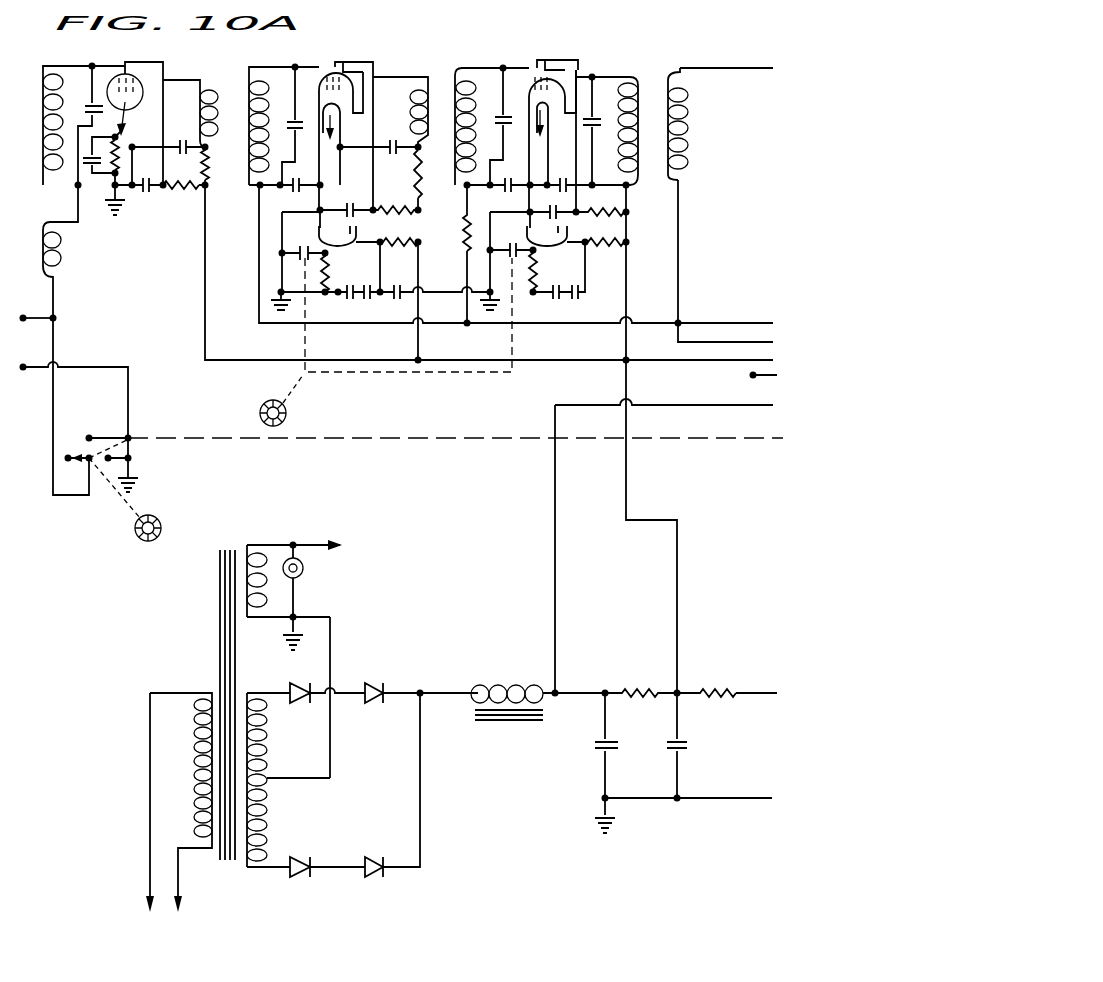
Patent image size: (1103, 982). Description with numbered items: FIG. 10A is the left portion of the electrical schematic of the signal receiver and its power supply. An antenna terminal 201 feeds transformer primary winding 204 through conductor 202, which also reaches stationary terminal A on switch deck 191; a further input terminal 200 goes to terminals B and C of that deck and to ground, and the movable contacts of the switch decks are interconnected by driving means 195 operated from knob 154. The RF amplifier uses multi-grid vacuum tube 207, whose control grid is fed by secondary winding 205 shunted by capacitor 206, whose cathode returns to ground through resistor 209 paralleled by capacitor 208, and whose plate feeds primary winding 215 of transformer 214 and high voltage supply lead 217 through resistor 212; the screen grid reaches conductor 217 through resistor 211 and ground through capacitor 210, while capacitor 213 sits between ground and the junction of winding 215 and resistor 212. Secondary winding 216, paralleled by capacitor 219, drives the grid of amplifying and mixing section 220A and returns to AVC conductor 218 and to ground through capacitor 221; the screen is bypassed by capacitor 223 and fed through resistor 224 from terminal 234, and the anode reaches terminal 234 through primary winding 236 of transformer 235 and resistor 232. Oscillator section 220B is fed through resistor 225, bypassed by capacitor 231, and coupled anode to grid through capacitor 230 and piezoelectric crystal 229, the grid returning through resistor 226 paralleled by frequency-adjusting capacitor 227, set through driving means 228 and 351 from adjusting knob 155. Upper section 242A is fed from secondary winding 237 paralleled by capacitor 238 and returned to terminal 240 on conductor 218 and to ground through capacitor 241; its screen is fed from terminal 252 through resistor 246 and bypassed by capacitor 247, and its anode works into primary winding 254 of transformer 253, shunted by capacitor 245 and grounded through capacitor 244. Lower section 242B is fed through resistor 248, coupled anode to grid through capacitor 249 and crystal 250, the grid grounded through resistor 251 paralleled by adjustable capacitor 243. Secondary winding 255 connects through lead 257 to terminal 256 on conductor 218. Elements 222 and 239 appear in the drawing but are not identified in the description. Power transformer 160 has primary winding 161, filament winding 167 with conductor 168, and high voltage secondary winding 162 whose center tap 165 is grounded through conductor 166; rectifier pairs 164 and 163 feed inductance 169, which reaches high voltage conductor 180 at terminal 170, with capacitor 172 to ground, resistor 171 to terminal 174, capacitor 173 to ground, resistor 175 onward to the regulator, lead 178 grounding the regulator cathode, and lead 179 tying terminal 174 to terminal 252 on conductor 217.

The knob 154 is at (178, 518).
The adjusting knob 155 is at (260, 415).
The transformer 160 is at (193, 654).
The primary winding 161 is at (203, 850).
The high voltage secondary winding 162 is at (265, 868).
The pair of rectifiers 163 is at (375, 878).
The pair of rectifiers 164 is at (376, 682).
The center tap 165 is at (265, 778).
The conductor 166 is at (331, 626).
The filament secondary winding 167 is at (265, 527).
The conductor 168 is at (320, 543).
The inductance 169 is at (510, 685).
The terminal 170 is at (558, 691).
The resistor 171 is at (648, 690).
The capacitor 172 is at (614, 740).
The capacitor 173 is at (684, 744).
The terminal 174 is at (680, 691).
The resistor 175 is at (738, 691).
The lead 178 is at (740, 775).
The lead 179 is at (626, 503).
The high voltage conductor 180 is at (747, 385).
The switch deck 191 is at (105, 526).
The driving means 195 is at (460, 442).
The input terminal 200 is at (23, 367).
The terminal 201 is at (23, 316).
The conductor 202 is at (58, 315).
The transformer primary winding 204 is at (43, 228).
The transformer secondary winding 205 is at (43, 120).
The capacitor 206 is at (88, 100).
The multi-grid vacuum tube 207 is at (137, 77).
The capacitor 208 is at (97, 180).
The resistor 209 is at (124, 152).
The capacitor 210 is at (148, 190).
The resistor 211 is at (188, 192).
The resistor 212 is at (212, 171).
The capacitor 213 is at (181, 138).
The transformer 214 is at (257, 66).
The primary winding 215 is at (203, 80).
The secondary winding 216 is at (285, 74).
The high voltage supply conductor 217 is at (205, 320).
The AVC conductor 218 is at (258, 215).
The capacitor 219 is at (297, 118).
The amplifying and mixing section 220A is at (343, 72).
The crystal controlled oscillator section 220B is at (317, 230).
The capacitor 221 is at (290, 192).
The capacitor 222 is at (392, 140).
The capacitor 223 is at (347, 205).
The resistor 224 is at (404, 201).
The resistor 225 is at (411, 240).
The resistor 226 is at (318, 274).
The capacitor 227 is at (300, 258).
The driving means 228 is at (303, 348).
The piezoelectric crystal 229 is at (347, 300).
The capacitor 230 is at (372, 300).
The capacitor 231 is at (398, 284).
The resistor 232 is at (418, 186).
The terminal 234 is at (444, 352).
The transformer 235 is at (468, 62).
The transformer primary winding 236 is at (415, 72).
The transformer secondary winding 237 is at (482, 67).
The capacitor 238 is at (508, 114).
The resistor 239 is at (464, 222).
The terminal 240 is at (470, 326).
The capacitor 241 is at (512, 192).
The upper section 242A is at (553, 67).
The lower section 242B is at (558, 232).
The adjustable capacitor 243 is at (507, 256).
The capacitor 244 is at (563, 178).
The capacitor 245 is at (593, 116).
The resistor 246 is at (620, 210).
The capacitor 247 is at (626, 238).
The resistor 248 is at (607, 250).
The capacitor 249 is at (580, 300).
The piezoelectric crystal 250 is at (550, 300).
The resistor 251 is at (538, 280).
The terminal 252 is at (651, 352).
The transformer 253 is at (683, 64).
The transformer primary winding 254 is at (624, 77).
The transformer secondary winding 255 is at (685, 67).
The terminal 256 is at (680, 320).
The lead 257 is at (680, 253).
The driving means 351 is at (298, 402).